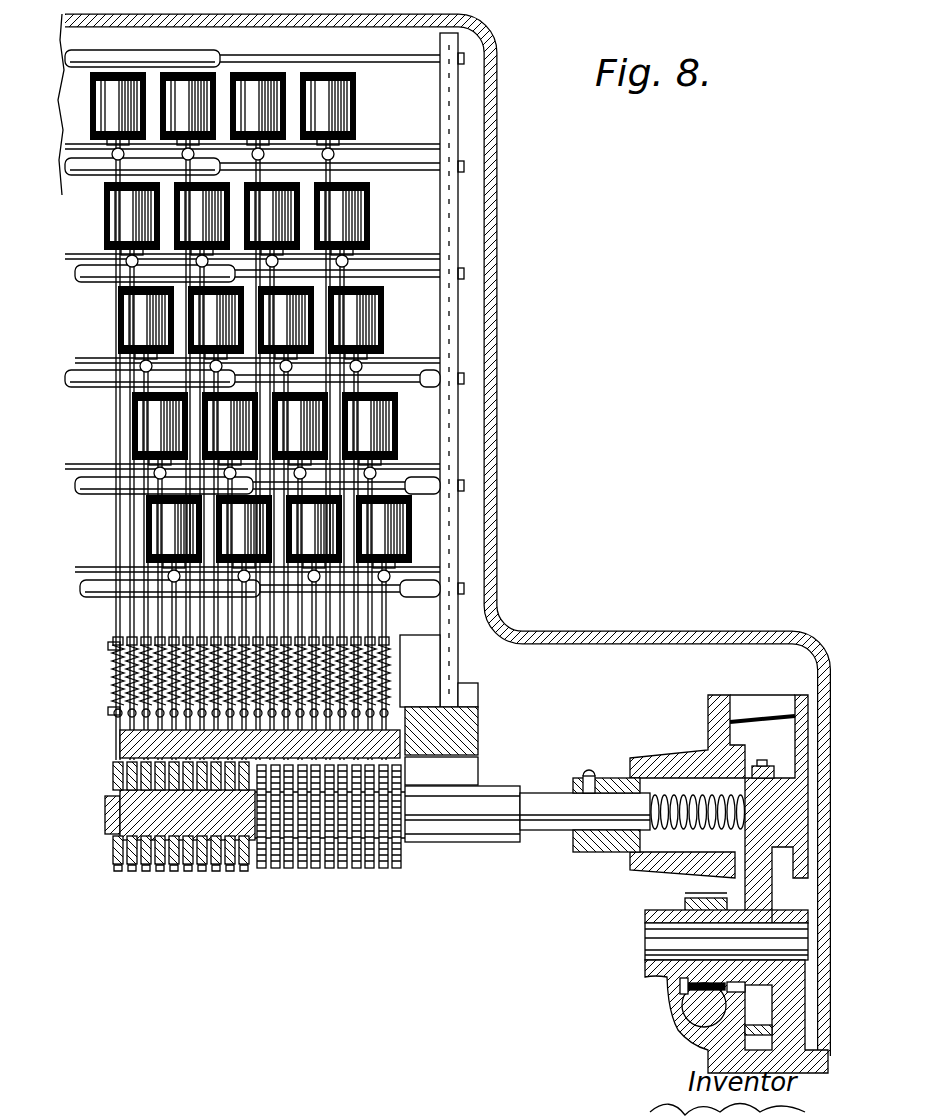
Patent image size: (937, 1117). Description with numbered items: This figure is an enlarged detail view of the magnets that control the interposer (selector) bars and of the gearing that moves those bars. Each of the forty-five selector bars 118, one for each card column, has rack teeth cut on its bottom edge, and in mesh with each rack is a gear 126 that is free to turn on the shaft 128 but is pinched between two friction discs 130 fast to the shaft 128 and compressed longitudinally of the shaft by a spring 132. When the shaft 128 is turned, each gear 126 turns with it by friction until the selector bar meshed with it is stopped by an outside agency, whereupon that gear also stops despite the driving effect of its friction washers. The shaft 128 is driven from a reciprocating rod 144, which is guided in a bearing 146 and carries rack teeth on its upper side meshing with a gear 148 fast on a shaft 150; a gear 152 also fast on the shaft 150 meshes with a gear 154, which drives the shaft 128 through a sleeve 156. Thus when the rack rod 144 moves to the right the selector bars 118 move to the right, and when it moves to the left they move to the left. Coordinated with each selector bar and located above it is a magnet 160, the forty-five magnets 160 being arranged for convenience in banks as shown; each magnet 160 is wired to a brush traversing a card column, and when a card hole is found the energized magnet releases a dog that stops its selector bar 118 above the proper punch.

The selector bar 118 is at (120, 746).
The gear 126 is at (147, 872).
The shaft 128 is at (108, 816).
The friction disc 130 is at (204, 872).
The spring 132 is at (634, 862).
The rod 144 is at (692, 1030).
The bearing 146 is at (672, 1000).
The gear 148 is at (688, 896).
The shaft 150 is at (660, 936).
The gear 152 is at (762, 890).
The gear 154 is at (758, 768).
The sleeve 156 is at (608, 844).
The magnet 160 is at (365, 214).